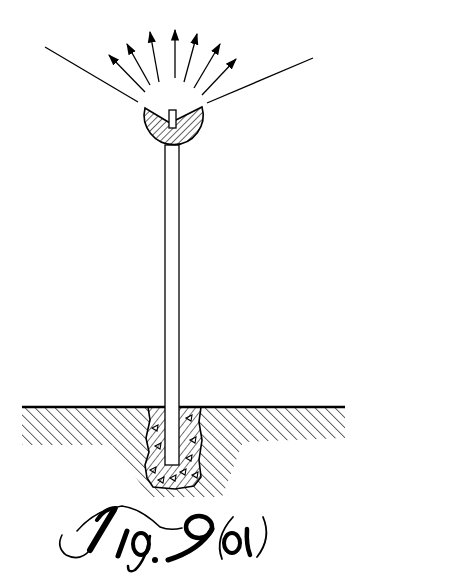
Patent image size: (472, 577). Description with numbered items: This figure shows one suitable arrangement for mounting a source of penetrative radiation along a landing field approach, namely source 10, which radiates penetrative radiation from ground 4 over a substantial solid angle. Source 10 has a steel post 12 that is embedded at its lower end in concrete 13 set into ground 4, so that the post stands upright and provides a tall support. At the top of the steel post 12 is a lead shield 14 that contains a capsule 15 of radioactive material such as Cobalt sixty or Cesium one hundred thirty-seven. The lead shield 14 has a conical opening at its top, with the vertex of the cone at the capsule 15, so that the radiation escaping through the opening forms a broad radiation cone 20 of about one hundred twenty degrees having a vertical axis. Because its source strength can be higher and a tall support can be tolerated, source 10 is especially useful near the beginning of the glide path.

The ground 4 is at (263, 407).
The source 10 is at (170, 135).
The steel post 12 is at (180, 247).
The concrete 13 is at (152, 404).
The lead shield 14 is at (191, 138).
The capsule 15 is at (201, 104).
The radiation cone 20 is at (126, 57).